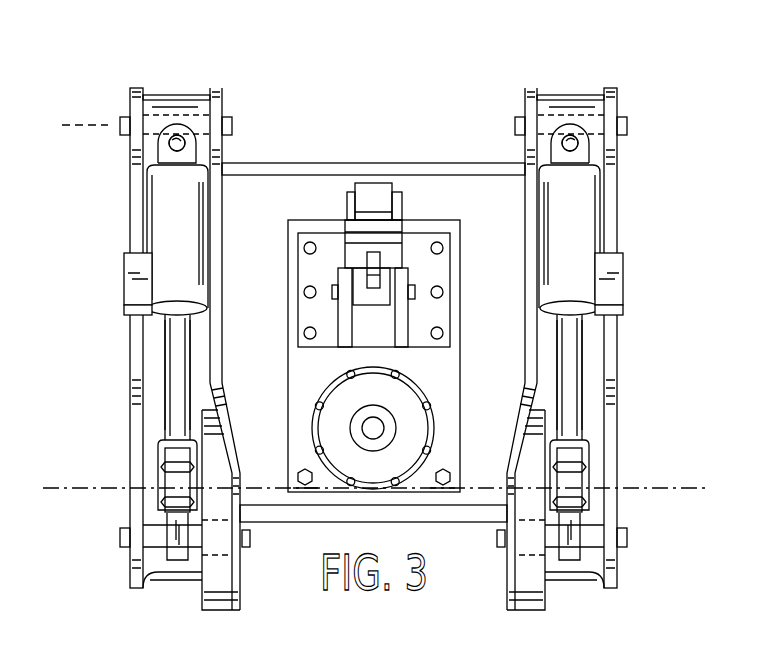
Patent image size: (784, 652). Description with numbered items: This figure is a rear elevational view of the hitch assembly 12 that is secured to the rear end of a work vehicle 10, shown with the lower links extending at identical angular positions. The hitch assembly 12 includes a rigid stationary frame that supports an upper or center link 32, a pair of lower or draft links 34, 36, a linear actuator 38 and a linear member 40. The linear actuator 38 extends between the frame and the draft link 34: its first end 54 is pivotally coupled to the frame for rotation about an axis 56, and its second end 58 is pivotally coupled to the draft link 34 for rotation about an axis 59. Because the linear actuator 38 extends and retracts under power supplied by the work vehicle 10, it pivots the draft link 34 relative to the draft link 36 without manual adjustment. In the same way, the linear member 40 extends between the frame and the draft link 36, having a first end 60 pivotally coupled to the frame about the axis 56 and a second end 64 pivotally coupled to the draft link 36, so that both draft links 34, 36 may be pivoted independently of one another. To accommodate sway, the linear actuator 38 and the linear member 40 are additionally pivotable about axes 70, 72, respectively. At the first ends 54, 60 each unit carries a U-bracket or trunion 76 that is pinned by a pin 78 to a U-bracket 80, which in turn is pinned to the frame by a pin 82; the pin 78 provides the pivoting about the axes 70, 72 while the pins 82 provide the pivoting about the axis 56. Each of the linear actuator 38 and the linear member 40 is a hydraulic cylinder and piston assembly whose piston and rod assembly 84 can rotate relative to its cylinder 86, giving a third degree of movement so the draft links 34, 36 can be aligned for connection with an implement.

The work vehicle 10 is at (372, 76).
The hitch assembly 12 is at (601, 84).
The center link 32 is at (372, 183).
The draft link 34 is at (168, 473).
The draft link 36 is at (573, 487).
The linear actuator 38 is at (156, 341).
The linear member 40 is at (583, 345).
The first end 54 is at (175, 95).
The axis 56 is at (62, 125).
The second end 58 is at (161, 466).
The axis 59 is at (65, 488).
The first end 60 is at (618, 90).
The second end 64 is at (593, 460).
The axis 70 is at (172, 141).
The axis 72 is at (567, 143).
The trunion 76 is at (187, 152).
The pin 78 is at (187, 150).
The U-bracket 80 is at (158, 95).
The pin 82 is at (120, 117).
The piston and rod assembly 84 is at (170, 383).
The cylinder 86 is at (152, 233).